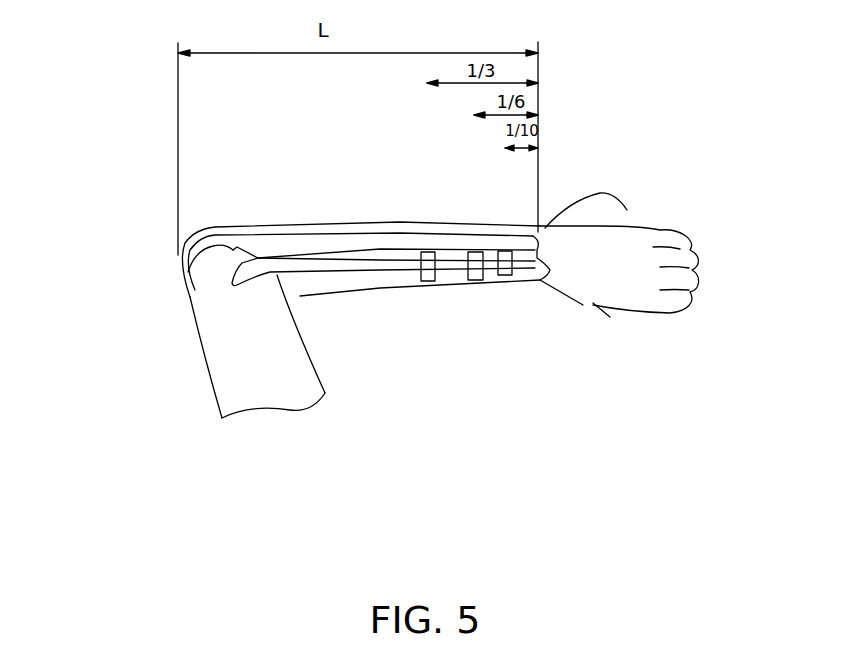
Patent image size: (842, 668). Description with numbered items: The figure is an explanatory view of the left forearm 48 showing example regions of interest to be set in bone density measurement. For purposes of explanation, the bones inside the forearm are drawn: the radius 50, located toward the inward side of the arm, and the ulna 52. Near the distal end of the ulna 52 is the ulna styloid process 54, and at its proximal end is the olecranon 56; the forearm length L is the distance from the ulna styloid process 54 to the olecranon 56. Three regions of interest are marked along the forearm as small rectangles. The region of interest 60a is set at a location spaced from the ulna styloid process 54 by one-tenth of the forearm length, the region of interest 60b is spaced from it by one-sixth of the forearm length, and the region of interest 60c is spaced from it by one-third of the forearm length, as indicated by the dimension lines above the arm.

The left forearm 48 is at (393, 408).
The radius 50 is at (321, 270).
The ulna 52 is at (313, 245).
The ulna styloid process 54 is at (627, 210).
The olecranon 56 is at (176, 252).
The region of interest 60a is at (505, 145).
The region of interest 60b is at (474, 108).
The region of interest 60c is at (427, 80).